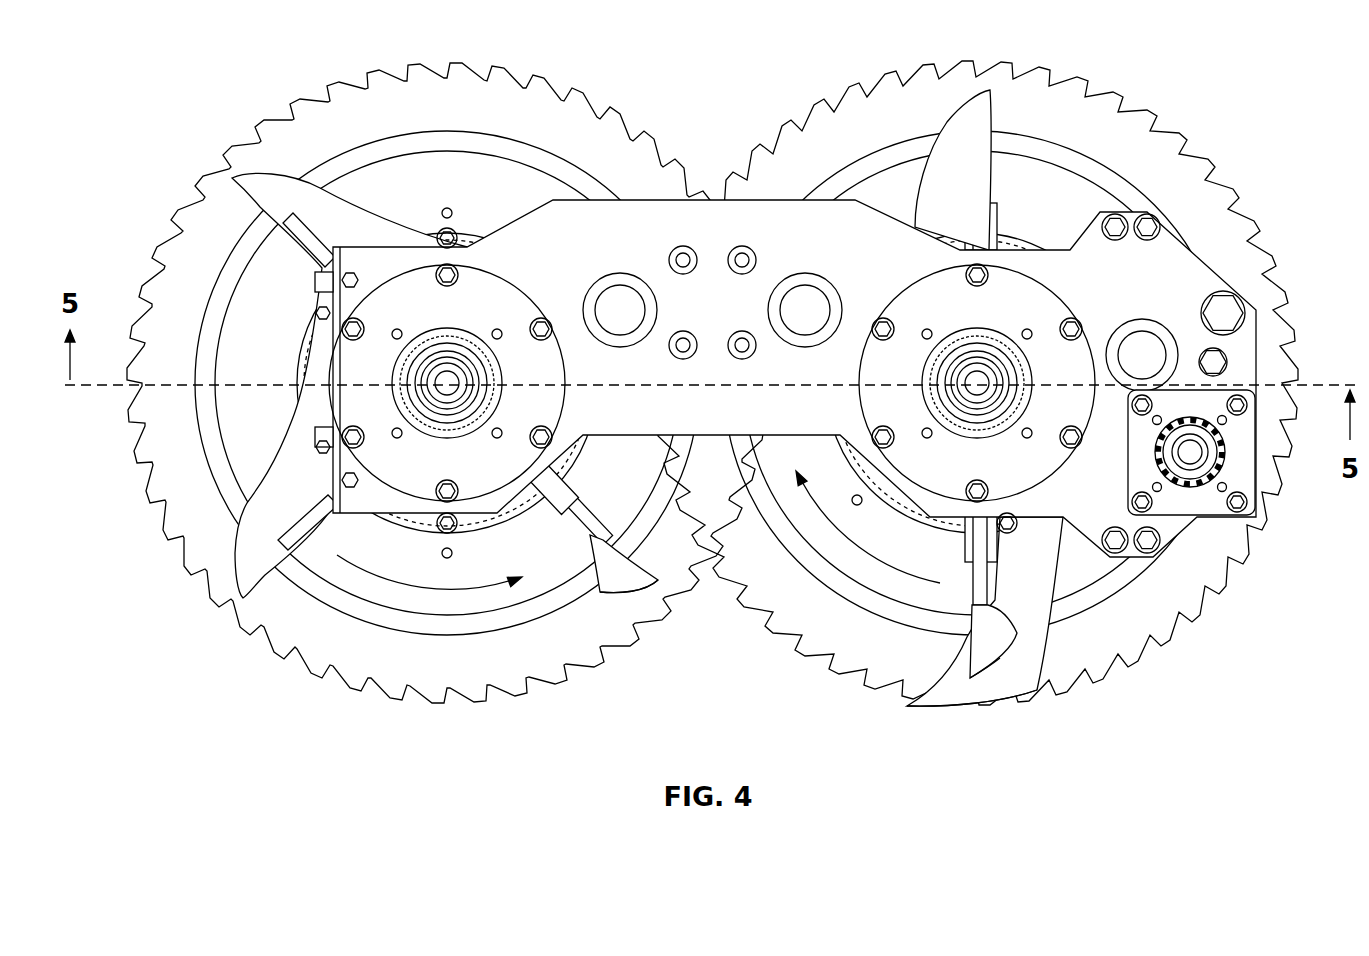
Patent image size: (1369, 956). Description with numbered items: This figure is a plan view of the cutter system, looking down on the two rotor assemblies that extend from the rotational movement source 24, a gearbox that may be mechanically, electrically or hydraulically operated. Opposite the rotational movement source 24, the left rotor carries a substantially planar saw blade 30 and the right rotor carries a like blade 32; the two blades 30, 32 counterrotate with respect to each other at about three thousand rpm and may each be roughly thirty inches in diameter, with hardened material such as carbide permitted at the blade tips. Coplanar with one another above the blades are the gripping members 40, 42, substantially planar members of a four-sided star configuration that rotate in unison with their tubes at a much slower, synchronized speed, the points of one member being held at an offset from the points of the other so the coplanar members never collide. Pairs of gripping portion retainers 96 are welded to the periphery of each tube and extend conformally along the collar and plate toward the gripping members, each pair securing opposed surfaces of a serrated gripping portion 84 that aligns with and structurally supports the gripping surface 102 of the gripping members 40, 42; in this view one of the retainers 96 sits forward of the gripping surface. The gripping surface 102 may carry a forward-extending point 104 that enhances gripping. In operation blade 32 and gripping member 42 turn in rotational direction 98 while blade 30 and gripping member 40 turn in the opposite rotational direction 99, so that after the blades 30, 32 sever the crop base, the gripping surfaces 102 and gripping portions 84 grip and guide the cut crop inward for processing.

The rotational movement source 24 is at (785, 379).
The blade 30 is at (532, 77).
The blade 32 is at (1130, 99).
The gripping member 40 is at (222, 537).
The gripping member 42 is at (1038, 688).
The gripping portion 84 is at (572, 537).
The gripping portion retainer 96 is at (573, 488).
The rotational direction 98 is at (855, 548).
The rotational direction 99 is at (410, 588).
The gripping surface 102 is at (640, 563).
The forward-extending point 104 is at (962, 700).